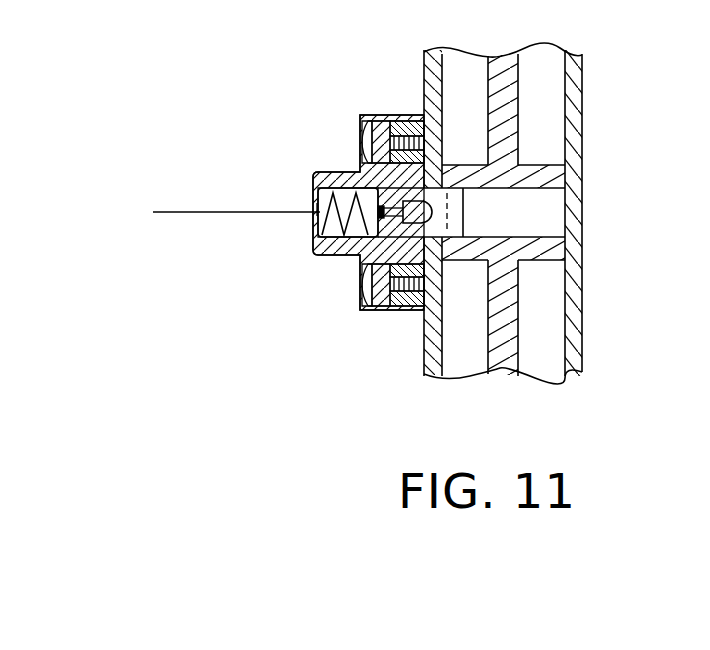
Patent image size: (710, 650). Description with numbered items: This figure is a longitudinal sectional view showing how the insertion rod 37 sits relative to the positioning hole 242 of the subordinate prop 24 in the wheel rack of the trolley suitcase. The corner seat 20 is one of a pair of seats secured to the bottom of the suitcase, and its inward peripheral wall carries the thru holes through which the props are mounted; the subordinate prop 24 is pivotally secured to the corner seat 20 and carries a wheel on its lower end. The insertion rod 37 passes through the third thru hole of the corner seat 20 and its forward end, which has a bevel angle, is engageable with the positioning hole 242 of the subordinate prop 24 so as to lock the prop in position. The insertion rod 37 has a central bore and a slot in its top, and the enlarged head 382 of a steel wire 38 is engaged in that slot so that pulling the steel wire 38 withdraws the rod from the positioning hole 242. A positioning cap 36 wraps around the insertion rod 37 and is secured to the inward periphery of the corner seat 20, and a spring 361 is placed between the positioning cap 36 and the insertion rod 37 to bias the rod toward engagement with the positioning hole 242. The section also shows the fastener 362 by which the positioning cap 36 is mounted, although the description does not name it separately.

The corner seat 20 is at (554, 213).
The subordinate prop 24 is at (520, 335).
The positioning hole 242 is at (548, 213).
The positioning cap 36 is at (336, 176).
The spring 361 is at (345, 227).
The screw 362 is at (408, 130).
The insertion rod 37 is at (455, 200).
The steel wire 38 is at (264, 209).
The enlarged head 382 is at (417, 217).